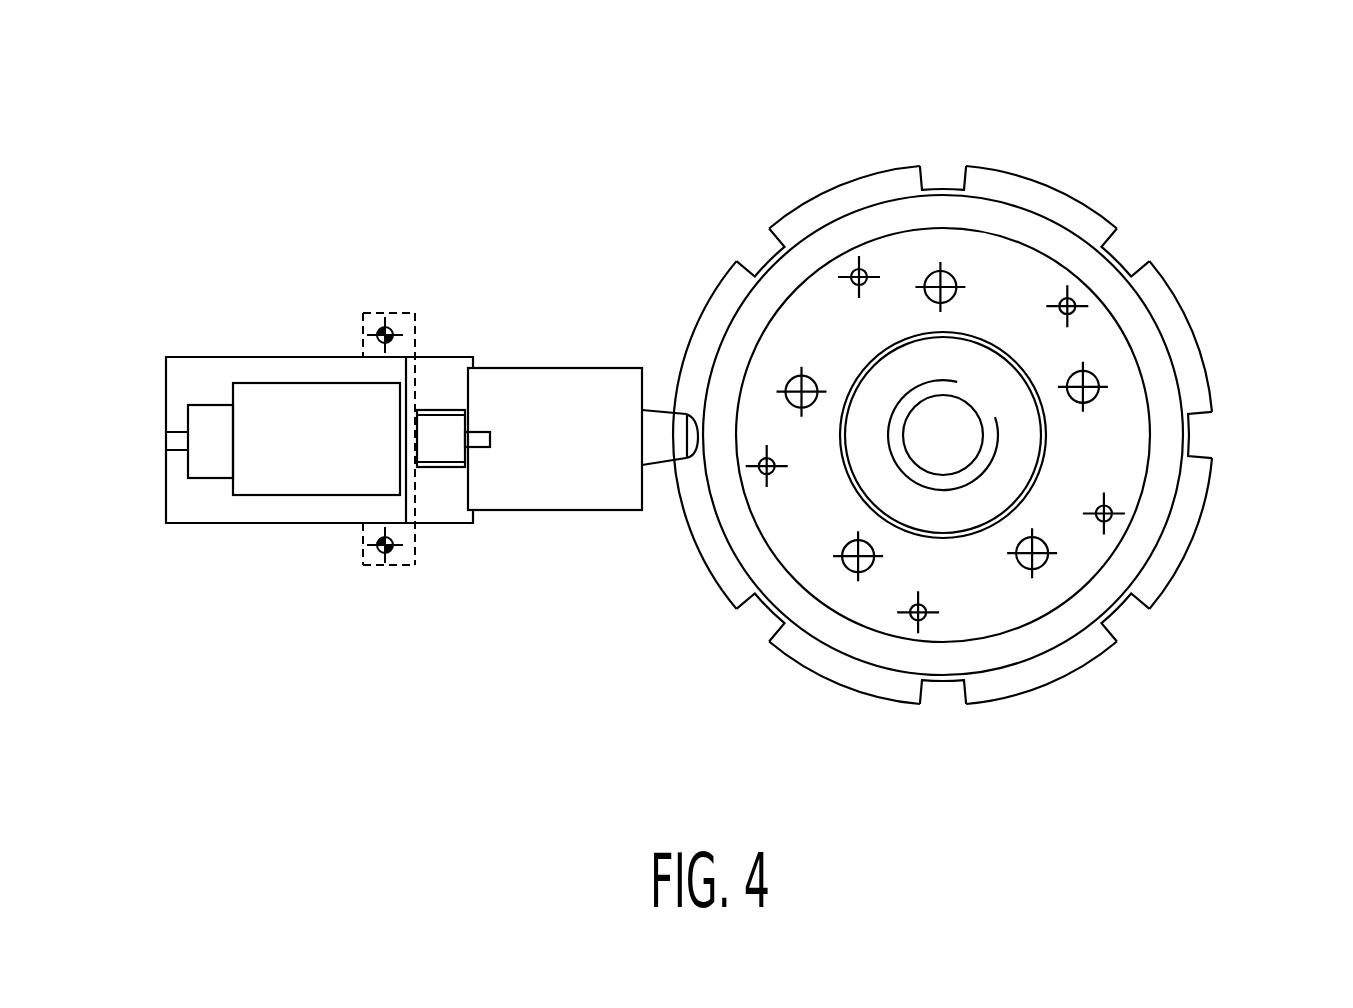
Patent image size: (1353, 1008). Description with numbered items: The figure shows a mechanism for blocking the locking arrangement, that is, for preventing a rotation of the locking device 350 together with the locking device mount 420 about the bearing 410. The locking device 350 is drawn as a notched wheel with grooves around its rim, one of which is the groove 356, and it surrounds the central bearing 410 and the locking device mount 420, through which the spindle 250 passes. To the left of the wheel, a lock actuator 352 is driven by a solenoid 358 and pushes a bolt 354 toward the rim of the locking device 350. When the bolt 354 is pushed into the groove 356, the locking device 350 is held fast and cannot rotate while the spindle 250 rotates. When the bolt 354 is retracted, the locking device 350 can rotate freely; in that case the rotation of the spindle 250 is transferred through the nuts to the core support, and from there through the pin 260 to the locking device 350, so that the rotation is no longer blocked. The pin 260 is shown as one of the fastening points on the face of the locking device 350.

The locking device 350 is at (1177, 326).
The groove 356 is at (940, 188).
The pin 260 is at (1093, 397).
The spindle 250 is at (930, 443).
The bearing 410 is at (962, 475).
The locking device mount 420 is at (917, 507).
The solenoid 358 is at (283, 410).
The lock actuator 352 is at (520, 388).
The bolt 354 is at (657, 428).